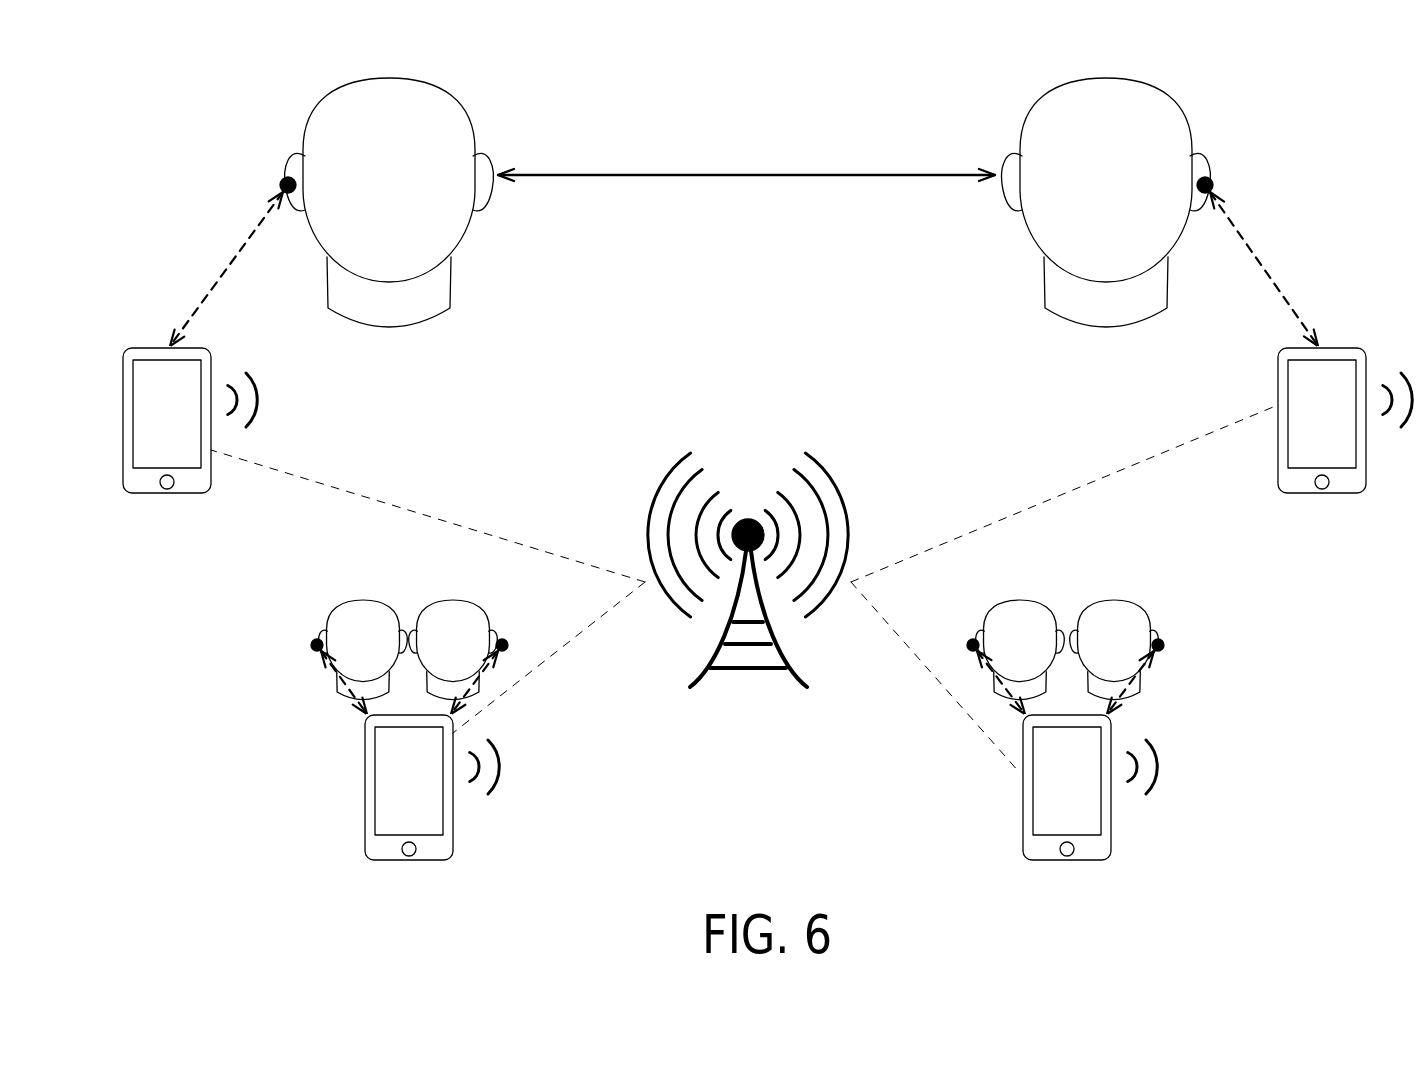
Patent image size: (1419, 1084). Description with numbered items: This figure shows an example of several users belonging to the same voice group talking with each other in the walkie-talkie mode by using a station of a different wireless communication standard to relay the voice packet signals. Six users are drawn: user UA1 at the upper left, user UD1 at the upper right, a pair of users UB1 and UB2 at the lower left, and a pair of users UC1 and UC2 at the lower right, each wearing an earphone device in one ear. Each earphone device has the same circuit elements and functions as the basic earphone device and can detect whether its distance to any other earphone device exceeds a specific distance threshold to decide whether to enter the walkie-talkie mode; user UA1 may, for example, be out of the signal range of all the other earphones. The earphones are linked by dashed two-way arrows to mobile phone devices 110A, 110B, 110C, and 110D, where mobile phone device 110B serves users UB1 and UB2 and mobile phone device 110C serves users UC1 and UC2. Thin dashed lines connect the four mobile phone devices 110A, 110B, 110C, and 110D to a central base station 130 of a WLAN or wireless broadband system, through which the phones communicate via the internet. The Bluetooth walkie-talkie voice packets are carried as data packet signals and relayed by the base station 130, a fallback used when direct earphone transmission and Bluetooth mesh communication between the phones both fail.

The user UA1 is at (389, 185).
The user UD1 is at (1106, 185).
The user UB1 is at (363, 634).
The user UB2 is at (453, 634).
The user UC1 is at (1020, 634).
The user UC2 is at (1114, 634).
The mobile phone device 110A is at (167, 495).
The mobile phone device 110B is at (408, 862).
The mobile phone device 110C is at (1067, 862).
The mobile phone device 110D is at (1322, 495).
The base station 130 is at (745, 673).